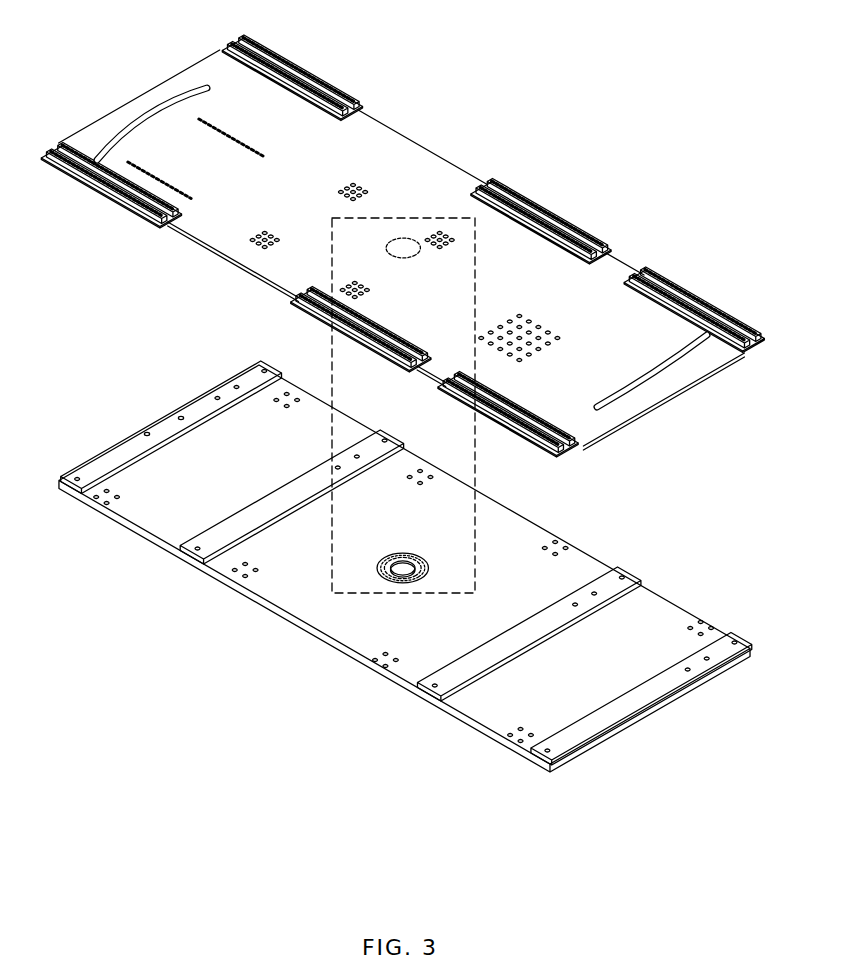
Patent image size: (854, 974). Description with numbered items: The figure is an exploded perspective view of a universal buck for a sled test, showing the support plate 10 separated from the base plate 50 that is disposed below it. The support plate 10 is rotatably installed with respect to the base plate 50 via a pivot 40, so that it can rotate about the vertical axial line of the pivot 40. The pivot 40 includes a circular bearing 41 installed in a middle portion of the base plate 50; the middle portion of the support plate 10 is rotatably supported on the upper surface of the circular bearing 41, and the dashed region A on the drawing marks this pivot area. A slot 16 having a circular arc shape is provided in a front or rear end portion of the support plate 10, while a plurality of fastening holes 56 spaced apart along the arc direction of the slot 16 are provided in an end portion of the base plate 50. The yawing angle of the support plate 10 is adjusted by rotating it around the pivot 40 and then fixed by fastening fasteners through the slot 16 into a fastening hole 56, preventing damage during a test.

The support plate 10 is at (626, 276).
The slot 16 is at (174, 102).
The pivot 40 is at (390, 583).
The circular bearing 41 is at (413, 553).
The base plate 50 is at (482, 717).
The fastening holes 56 is at (146, 432).
The enlarged region A is at (403, 218).